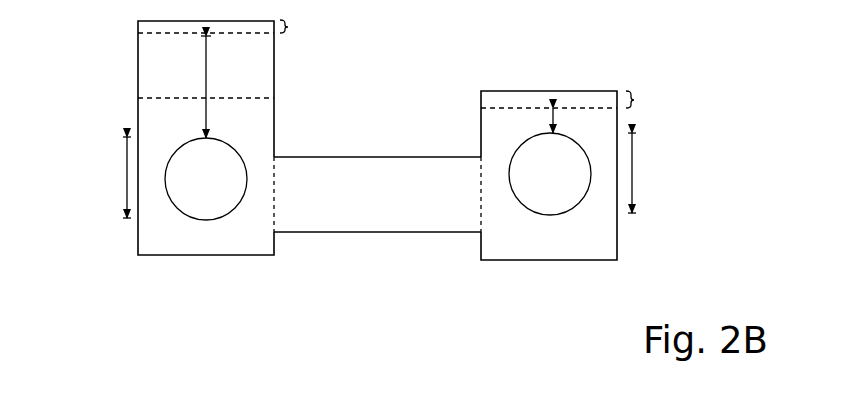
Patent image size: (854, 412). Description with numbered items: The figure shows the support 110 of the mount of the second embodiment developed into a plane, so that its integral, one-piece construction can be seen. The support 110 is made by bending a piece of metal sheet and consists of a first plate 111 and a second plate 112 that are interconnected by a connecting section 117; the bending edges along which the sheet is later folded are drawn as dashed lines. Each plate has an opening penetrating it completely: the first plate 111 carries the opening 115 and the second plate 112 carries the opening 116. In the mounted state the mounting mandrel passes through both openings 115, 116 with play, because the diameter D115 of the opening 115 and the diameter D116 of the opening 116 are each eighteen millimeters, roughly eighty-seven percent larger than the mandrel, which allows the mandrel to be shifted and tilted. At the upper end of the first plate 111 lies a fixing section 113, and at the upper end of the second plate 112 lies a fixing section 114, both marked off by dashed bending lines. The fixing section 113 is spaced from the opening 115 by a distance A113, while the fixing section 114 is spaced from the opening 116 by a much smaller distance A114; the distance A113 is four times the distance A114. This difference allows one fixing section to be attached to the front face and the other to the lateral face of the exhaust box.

The support 110 is at (73, 59).
The first plate 111 is at (205, 256).
The second plate 112 is at (547, 261).
The fixing section 113 is at (236, 26).
The fixing section 114 is at (581, 100).
The opening 115 is at (225, 189).
The opening 116 is at (569, 184).
The connecting section 117 is at (380, 156).
The distance between fixing section 113 and opening 115 A113 is at (206, 87).
The distance between fixing section 114 and opening 116 A114 is at (525, 119).
The diameter of opening 115 D115 is at (99, 177).
The diameter of opening 116 D116 is at (663, 173).